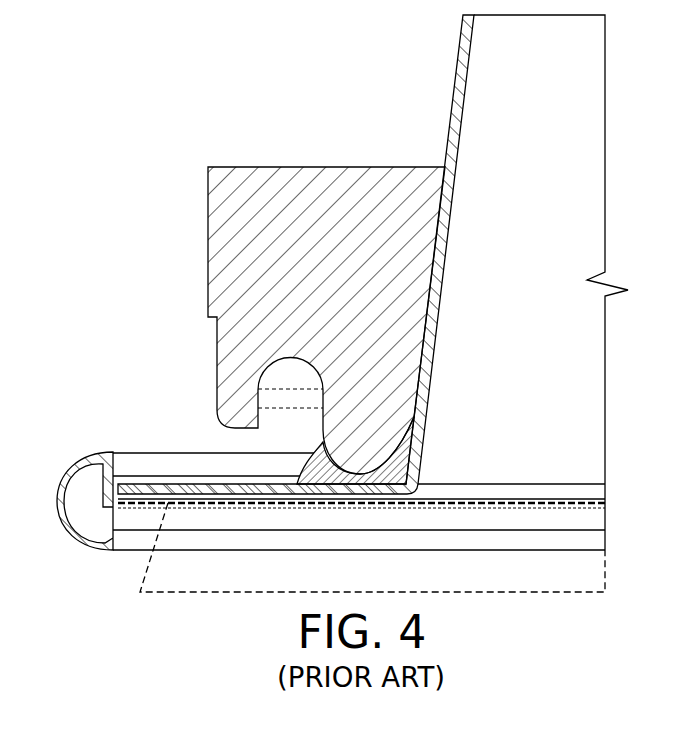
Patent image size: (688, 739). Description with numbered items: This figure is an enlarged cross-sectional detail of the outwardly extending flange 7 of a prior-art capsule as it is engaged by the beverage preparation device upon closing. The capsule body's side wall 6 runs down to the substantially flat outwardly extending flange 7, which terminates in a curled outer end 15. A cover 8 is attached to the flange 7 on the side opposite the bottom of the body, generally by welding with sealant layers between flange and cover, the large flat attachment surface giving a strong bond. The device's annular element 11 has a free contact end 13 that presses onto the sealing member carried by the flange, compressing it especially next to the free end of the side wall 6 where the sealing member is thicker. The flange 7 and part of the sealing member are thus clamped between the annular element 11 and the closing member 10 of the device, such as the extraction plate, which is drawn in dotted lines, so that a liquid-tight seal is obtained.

The side wall 6 is at (460, 72).
The outwardly extending flange 7 is at (250, 506).
The cover 8 is at (577, 500).
The closing member 10 is at (140, 580).
The annular element 11 is at (213, 265).
The free contact end 13 is at (378, 464).
The curled outer end 15 is at (63, 527).